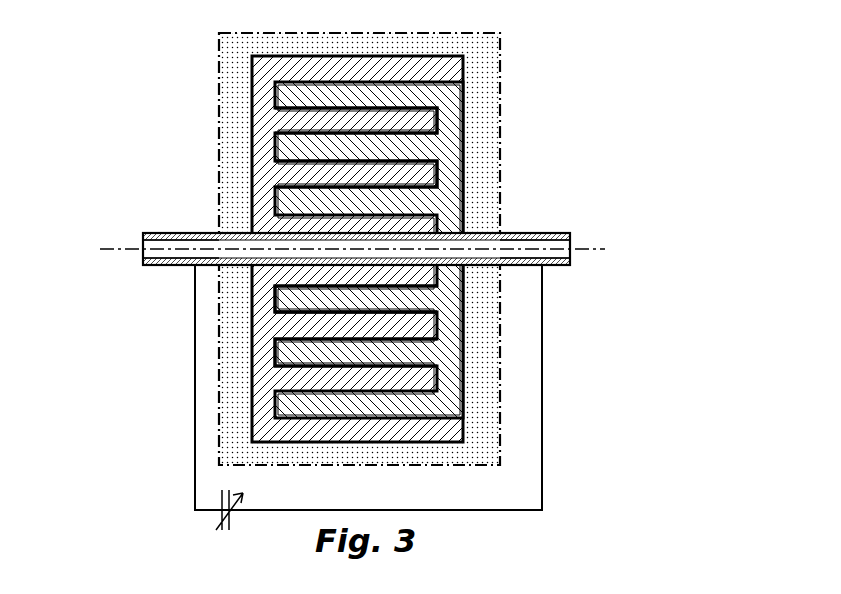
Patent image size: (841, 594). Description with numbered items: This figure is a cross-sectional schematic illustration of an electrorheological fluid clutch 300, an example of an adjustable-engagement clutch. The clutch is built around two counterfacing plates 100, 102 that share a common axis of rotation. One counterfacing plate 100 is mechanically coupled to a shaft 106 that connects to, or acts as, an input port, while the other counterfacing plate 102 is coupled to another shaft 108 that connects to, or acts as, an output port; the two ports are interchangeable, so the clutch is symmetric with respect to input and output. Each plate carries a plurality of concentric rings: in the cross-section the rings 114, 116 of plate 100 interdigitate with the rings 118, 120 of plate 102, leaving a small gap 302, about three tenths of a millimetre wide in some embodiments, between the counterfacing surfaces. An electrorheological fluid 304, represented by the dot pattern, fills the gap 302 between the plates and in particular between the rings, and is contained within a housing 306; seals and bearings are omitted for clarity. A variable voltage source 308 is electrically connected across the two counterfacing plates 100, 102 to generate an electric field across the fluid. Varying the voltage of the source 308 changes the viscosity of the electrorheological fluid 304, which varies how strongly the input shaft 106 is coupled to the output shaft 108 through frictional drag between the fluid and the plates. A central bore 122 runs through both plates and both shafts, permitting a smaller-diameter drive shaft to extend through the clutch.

The electrorheological fluid clutch 300 is at (354, 293).
The counterfacing plate 100 is at (250, 103).
The counterfacing plate 102 is at (463, 165).
The ring 114 is at (437, 121).
The ring 116 is at (437, 175).
The ring 118 is at (277, 292).
The ring 120 is at (277, 348).
The central bore 122 is at (143, 244).
The shaft 106 is at (163, 267).
The shaft 108 is at (563, 267).
The gap 302 is at (382, 310).
The electrorheological fluid 304 is at (483, 82).
The housing 306 is at (220, 182).
The variable voltage source 308 is at (215, 525).